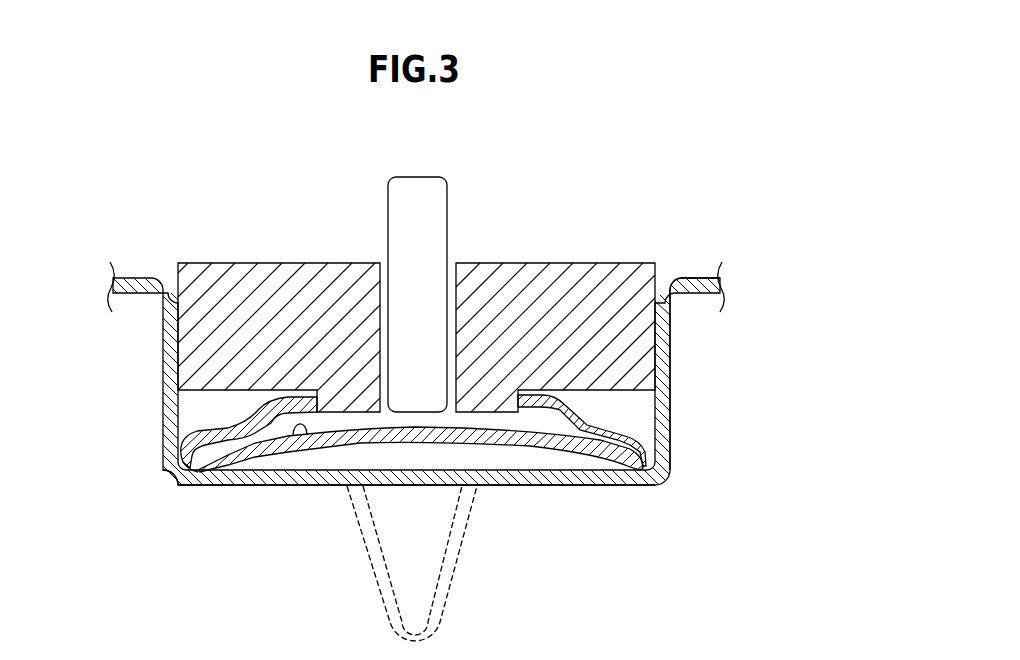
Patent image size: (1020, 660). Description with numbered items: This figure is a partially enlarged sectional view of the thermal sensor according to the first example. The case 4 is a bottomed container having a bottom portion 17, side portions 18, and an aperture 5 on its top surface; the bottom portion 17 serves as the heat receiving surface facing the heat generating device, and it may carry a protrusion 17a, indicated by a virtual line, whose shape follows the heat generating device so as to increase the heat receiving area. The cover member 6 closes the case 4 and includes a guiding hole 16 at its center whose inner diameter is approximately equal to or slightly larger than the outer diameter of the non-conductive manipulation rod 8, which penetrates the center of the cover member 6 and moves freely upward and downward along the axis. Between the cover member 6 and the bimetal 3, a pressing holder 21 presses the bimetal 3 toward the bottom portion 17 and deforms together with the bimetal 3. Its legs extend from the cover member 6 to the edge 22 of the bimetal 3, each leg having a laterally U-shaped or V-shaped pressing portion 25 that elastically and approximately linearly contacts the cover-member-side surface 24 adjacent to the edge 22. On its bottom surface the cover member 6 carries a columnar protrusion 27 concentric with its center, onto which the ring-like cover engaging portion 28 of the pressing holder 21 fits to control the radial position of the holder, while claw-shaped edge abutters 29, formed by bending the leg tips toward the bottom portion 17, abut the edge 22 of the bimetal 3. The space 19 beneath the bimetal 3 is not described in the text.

The bimetal 3 is at (512, 447).
The case 4 is at (737, 428).
The aperture 5 is at (659, 277).
The cover member 6 is at (613, 298).
The manipulation rod 8 is at (437, 177).
The guiding hole 16 is at (452, 260).
The bottom portion 17 is at (623, 484).
The protrusion 17a is at (442, 617).
The side portions 18 is at (673, 442).
The space 19 is at (567, 463).
The pressing holder 21 is at (225, 416).
The edge 22 is at (196, 473).
The cover-member-side surface 24 is at (299, 436).
The pressing portion 25 is at (254, 445).
The protrusion 27 is at (330, 412).
The cover engaging portion 28 is at (299, 396).
The edge abutters 29 is at (176, 481).